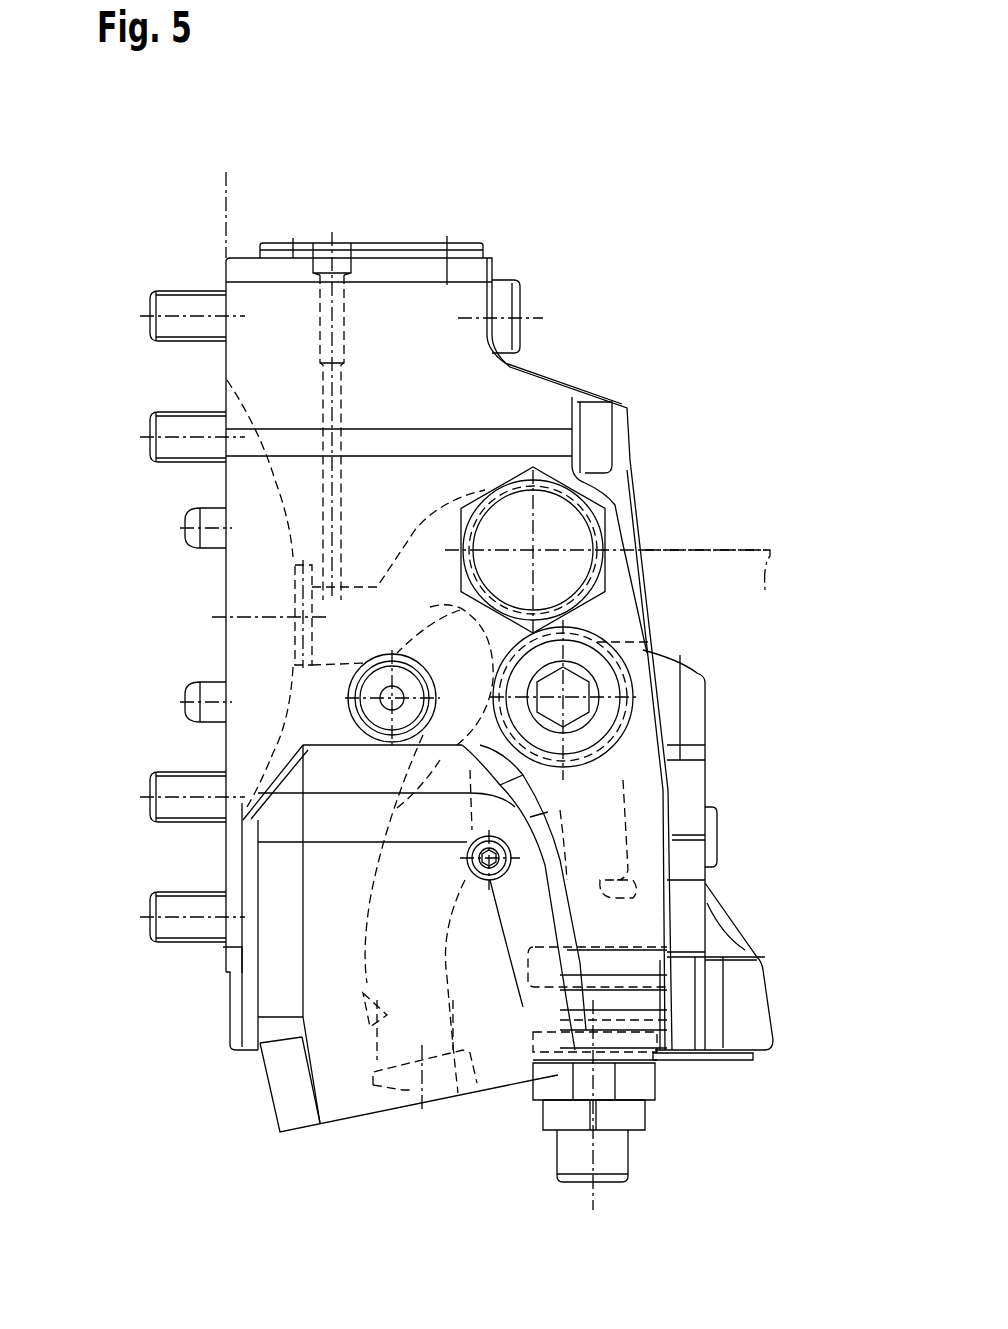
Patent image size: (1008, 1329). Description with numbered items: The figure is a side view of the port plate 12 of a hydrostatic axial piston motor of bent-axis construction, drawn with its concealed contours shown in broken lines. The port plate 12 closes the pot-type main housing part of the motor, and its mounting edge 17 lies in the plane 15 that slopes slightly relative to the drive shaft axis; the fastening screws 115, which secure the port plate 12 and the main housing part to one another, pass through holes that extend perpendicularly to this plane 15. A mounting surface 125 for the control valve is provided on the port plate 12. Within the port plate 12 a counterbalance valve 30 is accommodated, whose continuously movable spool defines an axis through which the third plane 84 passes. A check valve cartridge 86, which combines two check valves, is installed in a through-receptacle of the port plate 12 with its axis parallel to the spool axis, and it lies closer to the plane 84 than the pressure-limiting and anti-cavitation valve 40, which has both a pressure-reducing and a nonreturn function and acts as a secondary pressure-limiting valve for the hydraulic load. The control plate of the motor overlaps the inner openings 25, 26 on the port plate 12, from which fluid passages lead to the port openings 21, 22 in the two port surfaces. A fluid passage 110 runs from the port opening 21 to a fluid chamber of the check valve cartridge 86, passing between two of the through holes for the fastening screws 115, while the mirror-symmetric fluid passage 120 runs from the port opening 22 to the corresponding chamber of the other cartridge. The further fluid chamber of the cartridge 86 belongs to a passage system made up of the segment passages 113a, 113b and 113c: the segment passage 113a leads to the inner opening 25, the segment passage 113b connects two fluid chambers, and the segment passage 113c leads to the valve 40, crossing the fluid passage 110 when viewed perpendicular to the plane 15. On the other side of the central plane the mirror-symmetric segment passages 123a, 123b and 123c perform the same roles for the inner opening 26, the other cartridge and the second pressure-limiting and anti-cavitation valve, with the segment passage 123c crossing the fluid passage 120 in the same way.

The port plate 12 is at (537, 398).
The plane 15 is at (225, 183).
The mounting edge 17 is at (223, 266).
The fastening screws 115 is at (165, 330).
The mounting surface 125 is at (378, 243).
The counterbalance valve 30 is at (575, 522).
The third plane 84 is at (707, 589).
The check valve cartridge 86 is at (575, 696).
The segment passage 113a is at (266, 579).
The segment passage 123a is at (295, 580).
The segment passage 113b is at (735, 662).
The segment passage 123b is at (650, 642).
The segment passage 113c is at (736, 894).
The segment passage 123c is at (635, 880).
The inner opening 25 is at (250, 687).
The inner opening 26 is at (295, 641).
The fluid passage 110 is at (221, 1017).
The fluid passage 120 is at (383, 1013).
The port opening 21 is at (409, 1090).
The port opening 22 is at (410, 1090).
The pressure-limiting and anti-cavitation valve 40 is at (638, 1095).